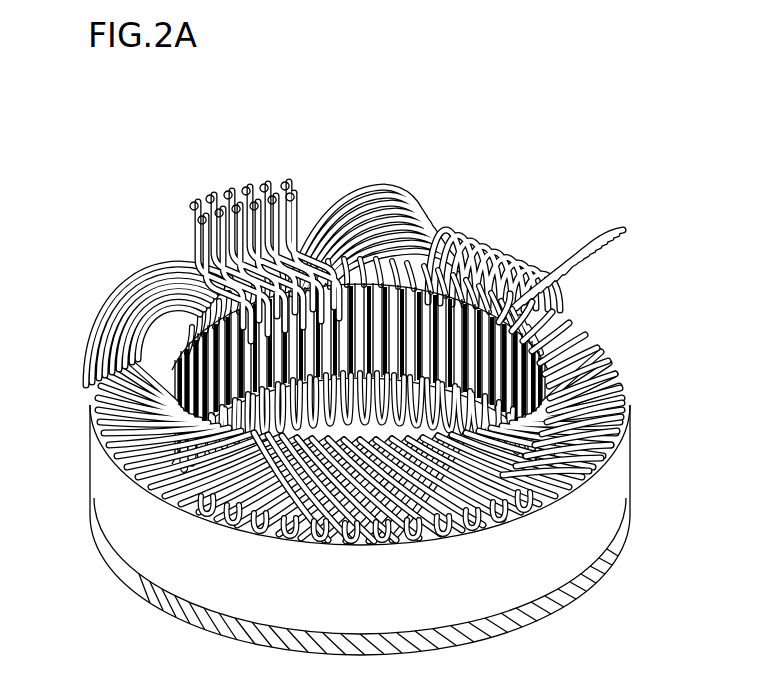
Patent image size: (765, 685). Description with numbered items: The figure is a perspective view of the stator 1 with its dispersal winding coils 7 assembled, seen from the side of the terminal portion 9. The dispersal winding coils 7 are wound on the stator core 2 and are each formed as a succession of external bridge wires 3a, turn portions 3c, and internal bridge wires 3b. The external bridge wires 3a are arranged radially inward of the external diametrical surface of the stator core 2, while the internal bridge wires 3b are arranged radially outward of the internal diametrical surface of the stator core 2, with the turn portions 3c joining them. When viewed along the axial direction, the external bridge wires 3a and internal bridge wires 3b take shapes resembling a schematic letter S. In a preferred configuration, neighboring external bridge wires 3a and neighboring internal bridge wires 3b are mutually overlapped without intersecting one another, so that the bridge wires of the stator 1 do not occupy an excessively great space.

The stator 1 is at (160, 176).
The stator core 2 is at (110, 490).
The external bridge wires 3a is at (398, 214).
The internal bridge wires 3b is at (543, 265).
The turn portions 3c is at (408, 228).
The dispersal winding coils 7 is at (620, 377).
The terminal portion 9 is at (305, 192).